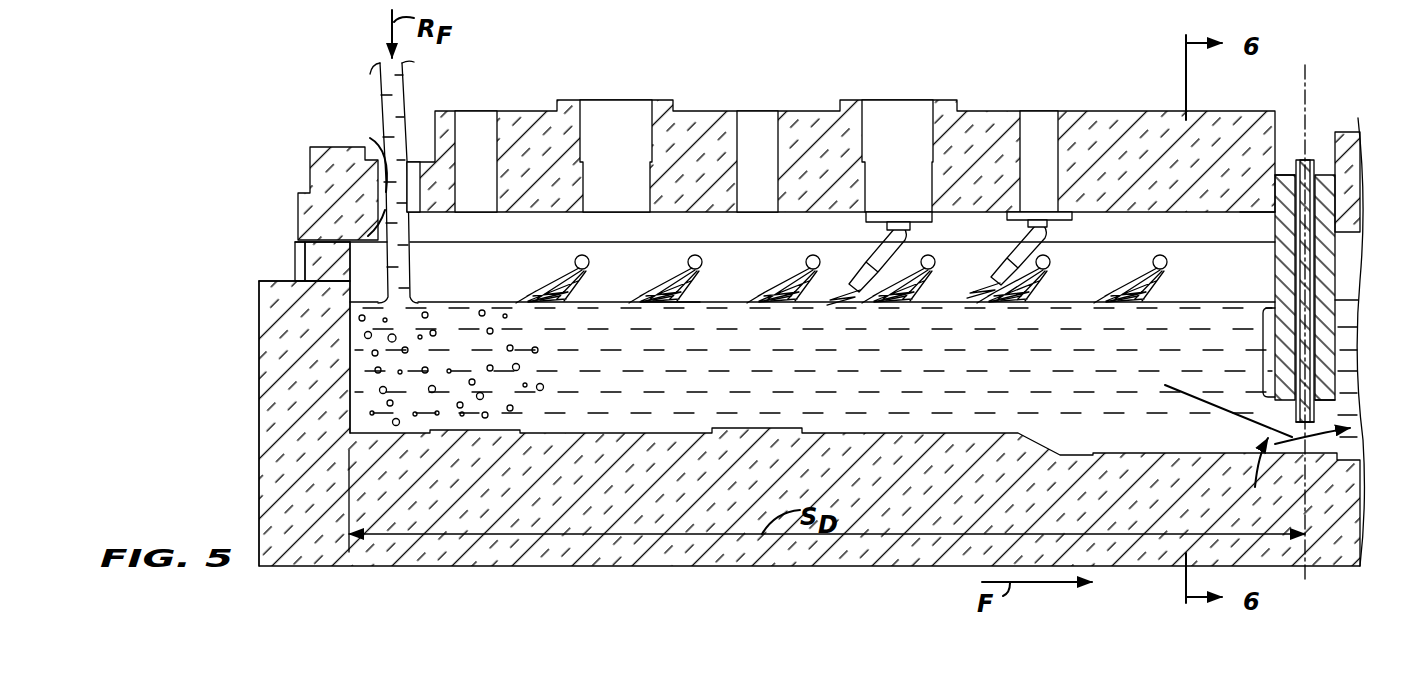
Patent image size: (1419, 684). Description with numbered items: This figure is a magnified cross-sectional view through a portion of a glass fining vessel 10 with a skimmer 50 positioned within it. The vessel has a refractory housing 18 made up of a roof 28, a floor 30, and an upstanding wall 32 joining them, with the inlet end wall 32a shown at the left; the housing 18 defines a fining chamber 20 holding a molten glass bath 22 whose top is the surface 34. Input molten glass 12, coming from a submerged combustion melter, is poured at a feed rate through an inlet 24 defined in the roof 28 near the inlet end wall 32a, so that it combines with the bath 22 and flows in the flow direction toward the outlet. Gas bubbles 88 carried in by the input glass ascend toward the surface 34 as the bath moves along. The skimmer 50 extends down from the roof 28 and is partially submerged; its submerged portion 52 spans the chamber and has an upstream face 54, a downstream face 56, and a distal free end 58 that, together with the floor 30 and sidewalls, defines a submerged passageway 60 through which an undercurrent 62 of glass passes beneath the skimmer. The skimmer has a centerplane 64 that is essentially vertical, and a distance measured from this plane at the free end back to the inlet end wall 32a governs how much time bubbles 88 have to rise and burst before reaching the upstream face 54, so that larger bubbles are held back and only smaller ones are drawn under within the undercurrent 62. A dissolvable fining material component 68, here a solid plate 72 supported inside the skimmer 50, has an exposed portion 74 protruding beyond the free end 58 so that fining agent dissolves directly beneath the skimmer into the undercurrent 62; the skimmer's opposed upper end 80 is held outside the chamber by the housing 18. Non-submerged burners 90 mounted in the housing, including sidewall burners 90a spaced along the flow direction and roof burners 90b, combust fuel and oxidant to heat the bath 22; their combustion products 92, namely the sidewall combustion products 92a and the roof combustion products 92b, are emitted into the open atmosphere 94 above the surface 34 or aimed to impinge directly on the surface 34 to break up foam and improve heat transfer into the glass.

The glass fining vessel 10 is at (320, 138).
The input molten glass 12 is at (397, 95).
The housing 18 is at (295, 230).
The fining chamber 20 is at (510, 213).
The molten glass bath 22 is at (856, 368).
The inlet 24 is at (364, 175).
The roof 28 is at (712, 128).
The floor 30 is at (598, 552).
The upstanding wall 32 is at (290, 362).
The inlet end wall 32a is at (277, 315).
The surface 34 is at (593, 300).
The skimmer 50 is at (1268, 228).
The submerged portion 52 is at (1253, 322).
The upstream face 54 is at (1272, 318).
The downstream face 56 is at (1335, 312).
The distal free end 58 is at (1320, 400).
The submerged passageway 60 is at (1293, 469).
The undercurrent 62 is at (1225, 421).
The centerplane 64 is at (1305, 75).
The dissolvable fining material component 68 is at (1298, 158).
The solid plate 72 is at (1318, 160).
The exposed portion 74 is at (1300, 412).
The upper end 80 is at (1283, 175).
The gas bubbles 88 is at (480, 300).
The non-submerged burners 90 is at (580, 250).
The sidewall burners 90a is at (588, 256).
The roof burners 90b is at (873, 248).
The combustion products 92 is at (830, 306).
The combustion products of sidewall burners 92a is at (542, 283).
The combustion products of roof burners 92b is at (848, 277).
The open atmosphere 94 is at (670, 269).